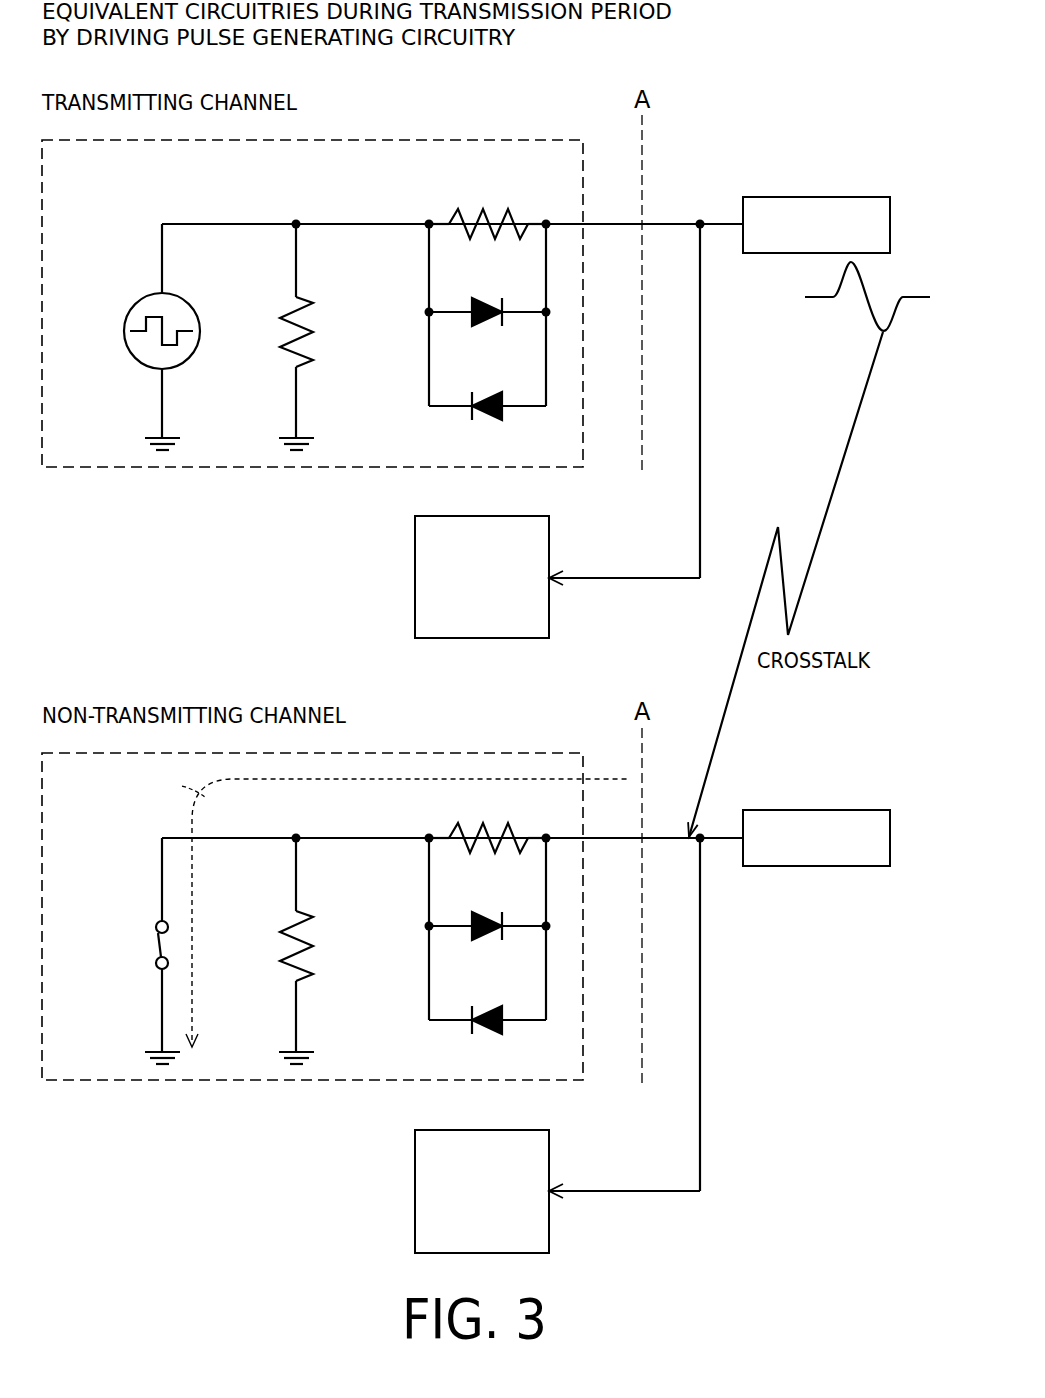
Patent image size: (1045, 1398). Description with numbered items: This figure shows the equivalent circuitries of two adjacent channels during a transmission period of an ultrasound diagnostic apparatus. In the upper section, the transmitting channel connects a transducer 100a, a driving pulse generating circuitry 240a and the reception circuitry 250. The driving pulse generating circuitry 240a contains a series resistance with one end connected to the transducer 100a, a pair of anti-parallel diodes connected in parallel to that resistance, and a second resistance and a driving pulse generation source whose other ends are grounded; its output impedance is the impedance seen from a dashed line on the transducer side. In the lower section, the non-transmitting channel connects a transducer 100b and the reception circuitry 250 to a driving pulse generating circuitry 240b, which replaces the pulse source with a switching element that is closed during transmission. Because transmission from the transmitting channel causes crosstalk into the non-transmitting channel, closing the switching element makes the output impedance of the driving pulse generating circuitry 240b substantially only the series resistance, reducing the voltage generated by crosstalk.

The driving pulse generating circuitry 240a is at (483, 139).
The driving pulse generating circuitry 240b is at (483, 752).
The transducer 100a is at (823, 196).
The transducer 100b is at (823, 809).
The reception circuitry 250 is at (503, 516).